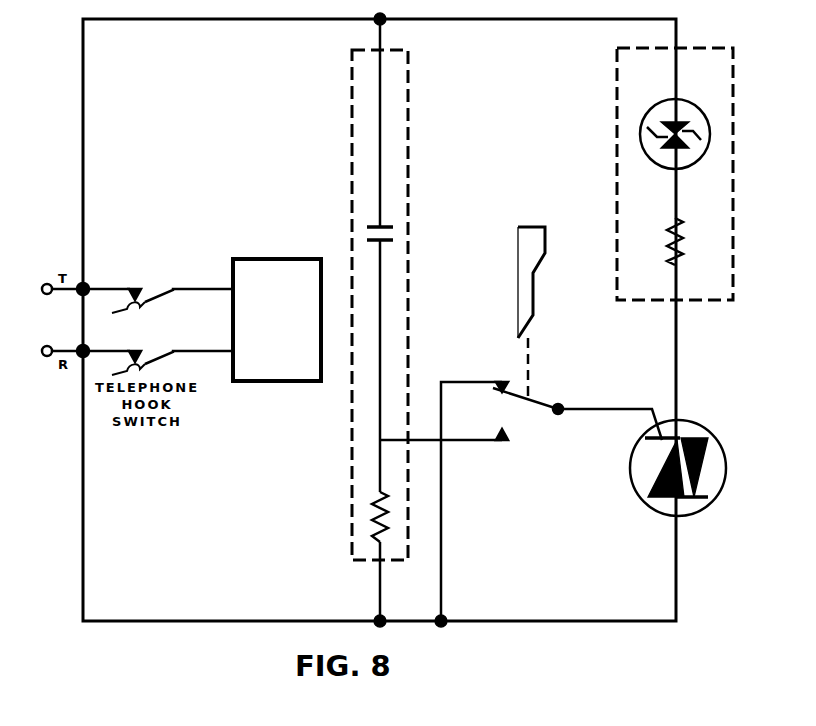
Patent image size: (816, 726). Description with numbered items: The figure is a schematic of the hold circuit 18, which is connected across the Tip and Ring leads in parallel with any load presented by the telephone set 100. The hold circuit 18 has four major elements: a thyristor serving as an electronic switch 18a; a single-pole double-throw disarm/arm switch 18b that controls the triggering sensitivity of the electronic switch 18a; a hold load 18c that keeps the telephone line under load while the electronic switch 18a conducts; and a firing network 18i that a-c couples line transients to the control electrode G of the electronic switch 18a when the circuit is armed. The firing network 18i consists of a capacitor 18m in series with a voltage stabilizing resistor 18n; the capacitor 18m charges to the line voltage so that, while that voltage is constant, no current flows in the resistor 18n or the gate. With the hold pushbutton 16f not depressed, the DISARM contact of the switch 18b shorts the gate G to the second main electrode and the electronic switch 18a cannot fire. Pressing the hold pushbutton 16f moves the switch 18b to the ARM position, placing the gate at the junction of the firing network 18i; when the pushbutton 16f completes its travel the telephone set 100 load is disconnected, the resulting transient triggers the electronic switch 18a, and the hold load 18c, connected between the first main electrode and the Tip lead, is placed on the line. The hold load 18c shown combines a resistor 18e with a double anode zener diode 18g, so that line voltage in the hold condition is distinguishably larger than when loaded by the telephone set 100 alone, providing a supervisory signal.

The hold circuit 18 is at (379, 320).
The telephone set 100 is at (273, 309).
The firing network 18i is at (409, 98).
The capacitor 18m is at (383, 224).
The voltage stabilizing resistor 18n is at (375, 516).
The disarm/arm switch 18b is at (522, 427).
The hold pushbutton 16f is at (527, 303).
The hold load 18c is at (616, 64).
The double zener diode 18g is at (640, 131).
The resistor 18e is at (668, 231).
The electronic switch 18a is at (648, 508).